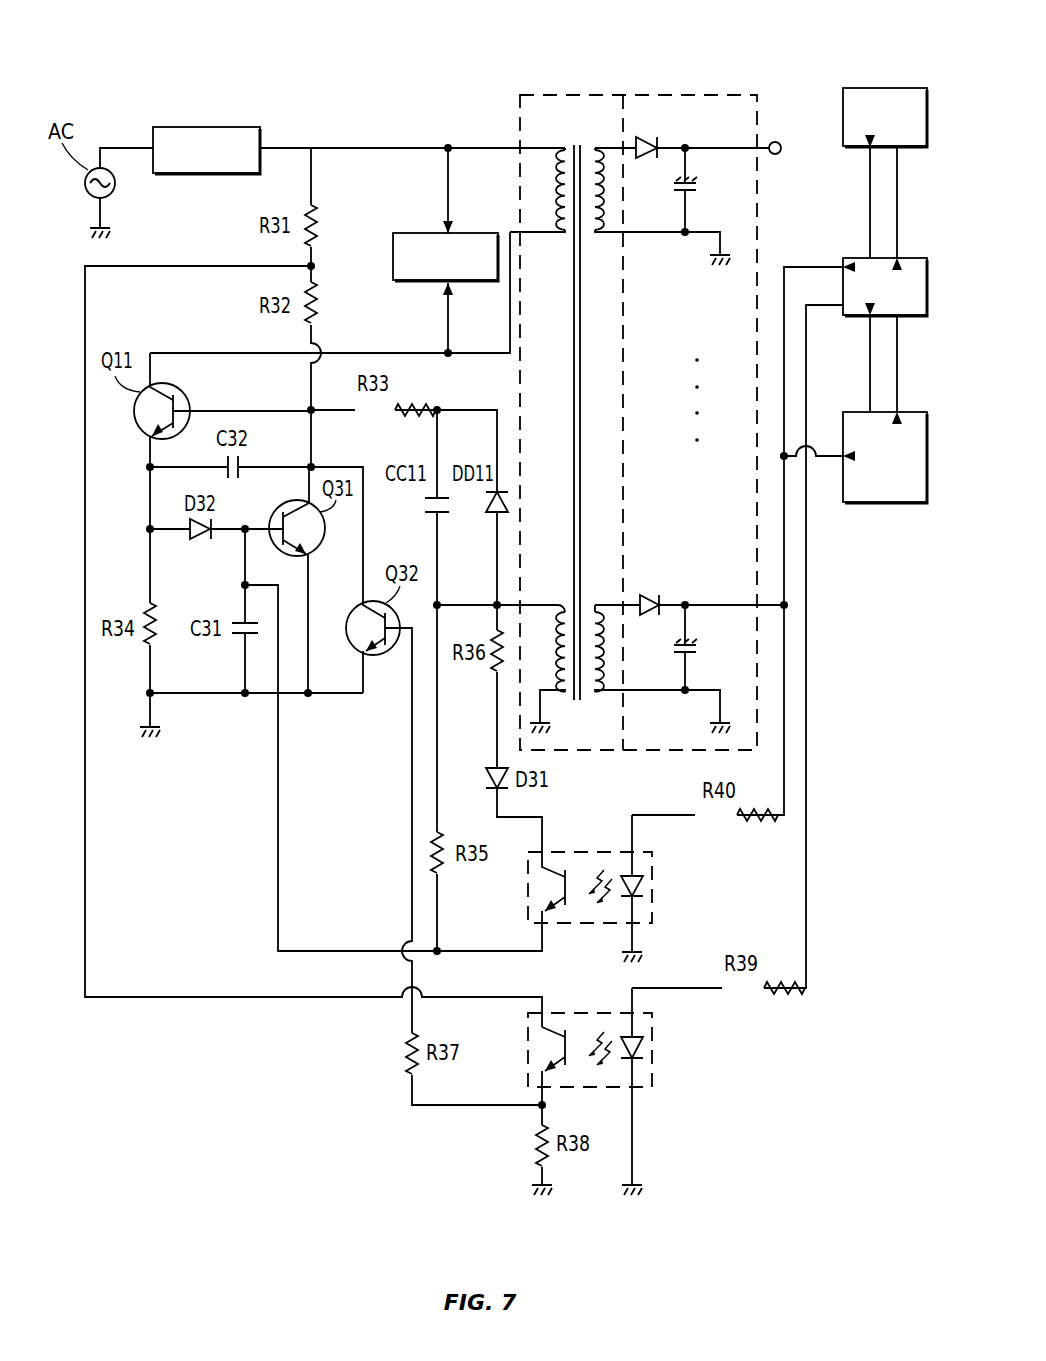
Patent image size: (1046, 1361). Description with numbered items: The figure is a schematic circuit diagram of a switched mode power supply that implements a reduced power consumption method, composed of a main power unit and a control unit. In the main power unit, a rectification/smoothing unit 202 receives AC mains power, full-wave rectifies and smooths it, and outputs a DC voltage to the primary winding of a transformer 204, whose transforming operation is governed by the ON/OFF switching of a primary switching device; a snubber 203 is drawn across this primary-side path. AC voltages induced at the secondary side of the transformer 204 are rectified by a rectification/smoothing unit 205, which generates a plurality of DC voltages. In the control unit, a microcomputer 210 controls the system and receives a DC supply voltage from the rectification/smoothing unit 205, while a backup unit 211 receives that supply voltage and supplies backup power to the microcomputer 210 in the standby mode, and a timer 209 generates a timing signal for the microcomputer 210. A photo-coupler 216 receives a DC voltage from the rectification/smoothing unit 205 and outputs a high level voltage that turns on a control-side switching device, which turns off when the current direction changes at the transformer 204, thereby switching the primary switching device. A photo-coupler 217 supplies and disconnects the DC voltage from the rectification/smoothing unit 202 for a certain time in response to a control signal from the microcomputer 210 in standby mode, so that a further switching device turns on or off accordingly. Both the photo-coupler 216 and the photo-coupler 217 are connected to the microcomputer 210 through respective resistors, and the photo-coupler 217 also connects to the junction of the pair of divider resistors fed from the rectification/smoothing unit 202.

The rectification/smoothing unit 202 is at (203, 125).
The snubber 203 is at (423, 232).
The transformer 204 is at (565, 95).
The rectification/smoothing unit 205 is at (683, 95).
The timer 209 is at (873, 88).
The microcomputer 210 is at (857, 258).
The backup unit 211 is at (880, 503).
The photo-coupler 216 is at (657, 899).
The photo-coupler 217 is at (657, 1063).